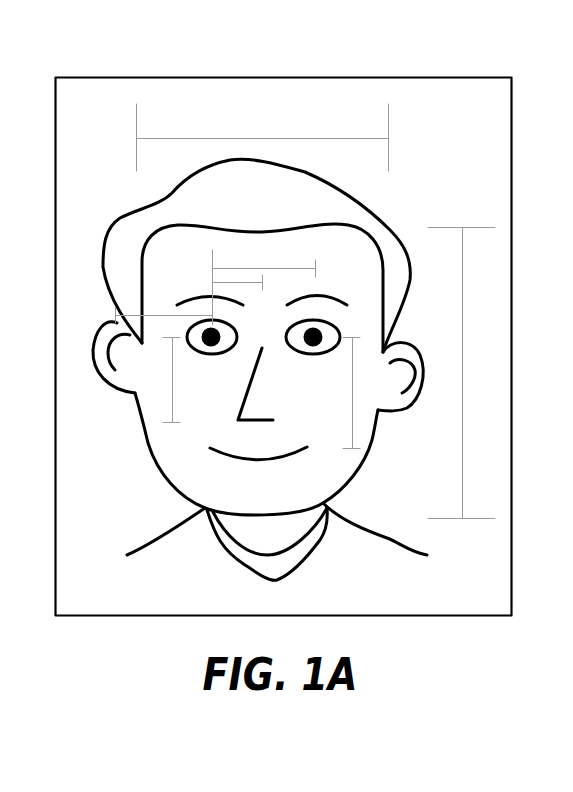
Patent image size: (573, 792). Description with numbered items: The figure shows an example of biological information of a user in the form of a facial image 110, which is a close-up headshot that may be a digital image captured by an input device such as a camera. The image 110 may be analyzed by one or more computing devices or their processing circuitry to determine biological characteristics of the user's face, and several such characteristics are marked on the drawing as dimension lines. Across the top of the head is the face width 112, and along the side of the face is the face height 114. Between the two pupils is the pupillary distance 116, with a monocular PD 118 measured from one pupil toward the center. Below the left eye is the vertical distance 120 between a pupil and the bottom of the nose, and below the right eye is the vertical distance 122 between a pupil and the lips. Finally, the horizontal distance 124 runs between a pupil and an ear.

The facial image 110 is at (321, 48).
The face width 112 is at (263, 137).
The face height 114 is at (463, 373).
The pupillary distance 116 is at (264, 285).
The monocular PD 118 is at (258, 282).
The vertical distance between a pupil and bottom of the nose 120 is at (188, 380).
The vertical distance between a pupil and the lips 122 is at (335, 393).
The horizontal distance between a pupil and an ear 124 is at (164, 310).